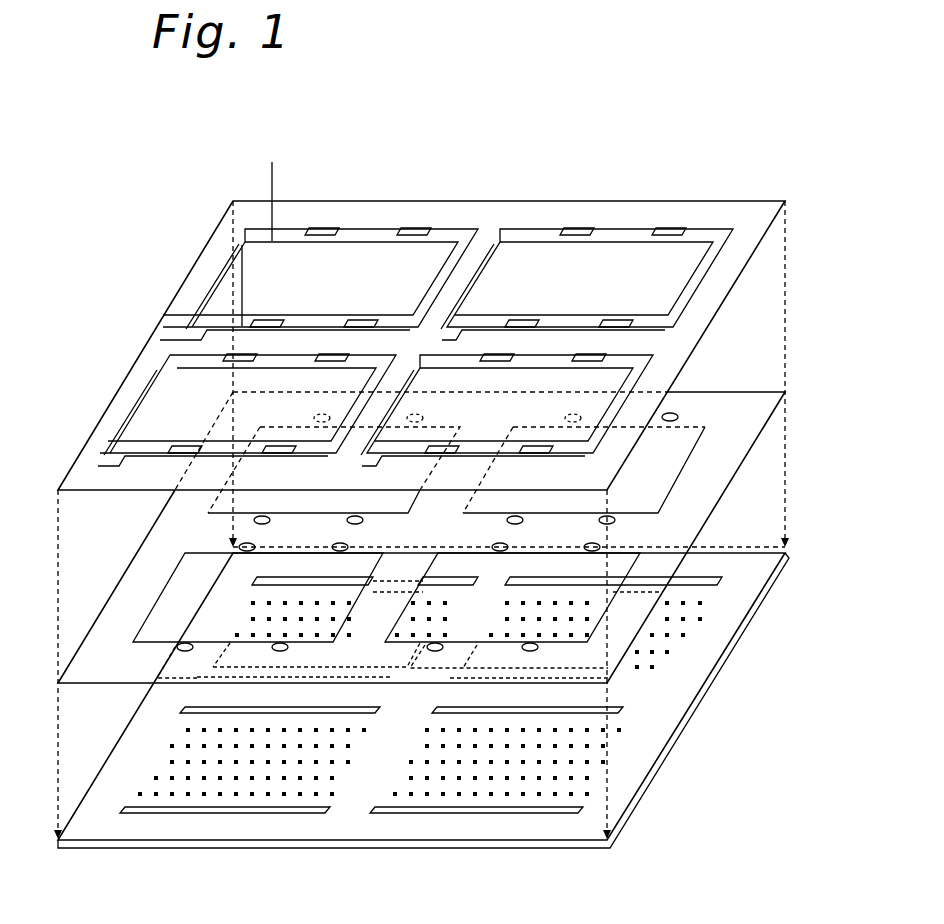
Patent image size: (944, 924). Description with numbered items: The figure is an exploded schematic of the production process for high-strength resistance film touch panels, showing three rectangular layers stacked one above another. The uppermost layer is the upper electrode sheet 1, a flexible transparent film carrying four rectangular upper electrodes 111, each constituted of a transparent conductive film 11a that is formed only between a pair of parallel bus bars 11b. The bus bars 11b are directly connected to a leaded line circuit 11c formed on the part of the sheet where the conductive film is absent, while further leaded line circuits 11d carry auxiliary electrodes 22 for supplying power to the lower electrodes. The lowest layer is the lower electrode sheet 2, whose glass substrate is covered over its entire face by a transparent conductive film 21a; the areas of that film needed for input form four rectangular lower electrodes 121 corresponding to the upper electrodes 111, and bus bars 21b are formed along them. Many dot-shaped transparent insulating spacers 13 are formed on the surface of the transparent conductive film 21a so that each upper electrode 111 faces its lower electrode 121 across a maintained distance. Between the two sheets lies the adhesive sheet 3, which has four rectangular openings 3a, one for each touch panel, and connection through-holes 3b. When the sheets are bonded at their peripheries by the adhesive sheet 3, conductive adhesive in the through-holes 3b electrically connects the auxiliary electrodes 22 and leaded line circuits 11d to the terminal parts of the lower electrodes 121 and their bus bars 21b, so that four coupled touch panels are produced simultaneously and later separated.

The upper electrode sheet 1 is at (128, 352).
The transparent conductive film 11a is at (302, 255).
The bus bars 11b is at (223, 283).
The leaded line circuit 11c is at (193, 333).
The leaded line circuits 11d is at (242, 245).
The upper electrodes 111 is at (359, 374).
The auxiliary electrodes 22 is at (335, 358).
The lower electrode sheet 2 is at (676, 731).
The transparent conductive film 21a is at (705, 588).
The bus bars 21b is at (255, 580).
The transparent insulating spacers 13 is at (667, 633).
The lower electrodes 121 is at (623, 712).
The adhesive sheet 3 is at (780, 393).
The rectangular openings 3a is at (587, 433).
The connection through-holes 3b is at (672, 412).